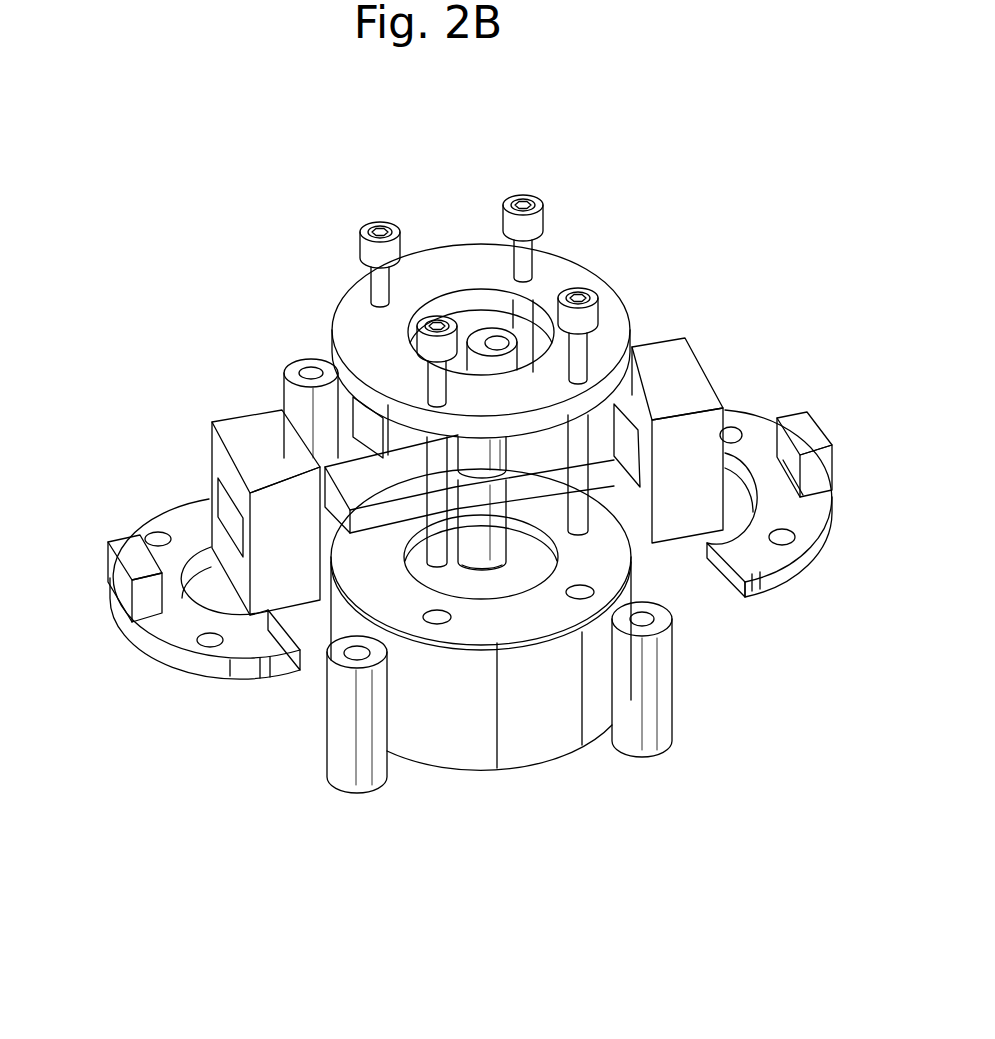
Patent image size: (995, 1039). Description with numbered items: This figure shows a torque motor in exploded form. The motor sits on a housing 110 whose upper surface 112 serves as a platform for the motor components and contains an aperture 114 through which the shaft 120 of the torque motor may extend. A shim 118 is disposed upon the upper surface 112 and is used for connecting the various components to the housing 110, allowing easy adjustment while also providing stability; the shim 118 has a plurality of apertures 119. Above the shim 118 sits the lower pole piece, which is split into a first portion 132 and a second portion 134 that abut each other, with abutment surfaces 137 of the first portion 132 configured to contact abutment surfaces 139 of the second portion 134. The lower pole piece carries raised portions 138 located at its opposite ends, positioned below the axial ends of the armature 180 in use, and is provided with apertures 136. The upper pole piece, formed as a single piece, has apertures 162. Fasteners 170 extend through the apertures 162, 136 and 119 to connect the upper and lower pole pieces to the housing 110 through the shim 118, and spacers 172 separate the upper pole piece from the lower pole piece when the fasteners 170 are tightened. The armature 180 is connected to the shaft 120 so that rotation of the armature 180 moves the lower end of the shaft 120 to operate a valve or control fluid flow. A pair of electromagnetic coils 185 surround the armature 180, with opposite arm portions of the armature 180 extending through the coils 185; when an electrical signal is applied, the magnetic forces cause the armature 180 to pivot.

The housing 110 is at (567, 725).
The upper surface 112 is at (513, 585).
The aperture 114 is at (483, 572).
The shim 118 is at (490, 540).
The apertures 119 is at (583, 598).
The shaft 120 is at (607, 582).
The first portion 132 is at (168, 632).
The second portion 134 is at (810, 522).
The apertures 136 is at (730, 430).
The abutment surfaces 137 is at (290, 637).
The raised portions 138 is at (808, 433).
The abutment surfaces 139 is at (713, 543).
The apertures 162 is at (377, 300).
The fasteners 170 is at (448, 318).
The spacers 172 is at (497, 340).
The armature 180 is at (367, 480).
The electromagnetic coils 185 is at (680, 383).